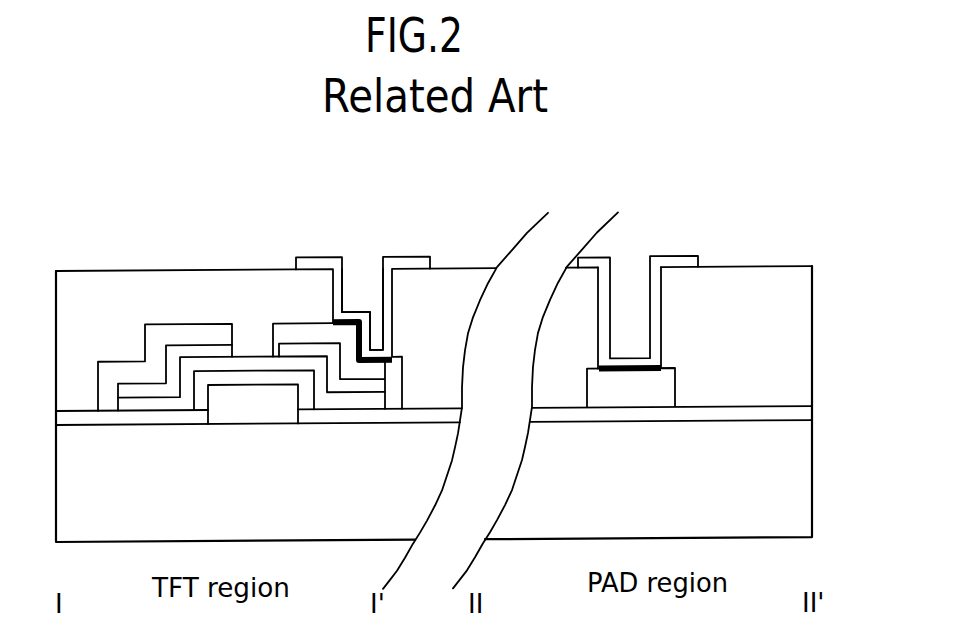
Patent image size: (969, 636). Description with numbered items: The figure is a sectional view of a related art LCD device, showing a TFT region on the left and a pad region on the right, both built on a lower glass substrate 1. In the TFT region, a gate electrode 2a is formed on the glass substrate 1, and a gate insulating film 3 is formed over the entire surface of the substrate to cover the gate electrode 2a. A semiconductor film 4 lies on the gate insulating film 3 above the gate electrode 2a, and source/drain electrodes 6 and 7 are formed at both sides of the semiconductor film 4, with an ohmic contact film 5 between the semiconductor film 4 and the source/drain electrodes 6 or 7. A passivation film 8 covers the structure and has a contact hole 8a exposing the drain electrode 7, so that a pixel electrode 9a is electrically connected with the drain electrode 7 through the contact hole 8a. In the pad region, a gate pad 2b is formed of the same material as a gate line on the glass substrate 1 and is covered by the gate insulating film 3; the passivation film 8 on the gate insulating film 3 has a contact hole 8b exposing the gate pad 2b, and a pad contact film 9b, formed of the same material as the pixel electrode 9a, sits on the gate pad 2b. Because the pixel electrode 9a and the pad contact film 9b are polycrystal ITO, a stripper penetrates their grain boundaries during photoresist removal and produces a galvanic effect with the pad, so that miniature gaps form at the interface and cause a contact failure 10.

The lower glass substrate 1 is at (62, 485).
The gate electrode 2a is at (256, 416).
The gate pad 2b is at (657, 393).
The gate insulating film 3 is at (62, 418).
The semiconductor film 4 is at (128, 403).
The ohmic contact film 5 is at (128, 389).
The source electrode 6 is at (190, 332).
The drain electrode 7 is at (285, 333).
The passivation film 8 is at (62, 322).
The contact hole 8a is at (358, 280).
The contact hole 8b is at (634, 268).
The pixel electrode 9a is at (400, 267).
The pad contact film 9b is at (675, 262).
The contact failure 10 is at (378, 362).